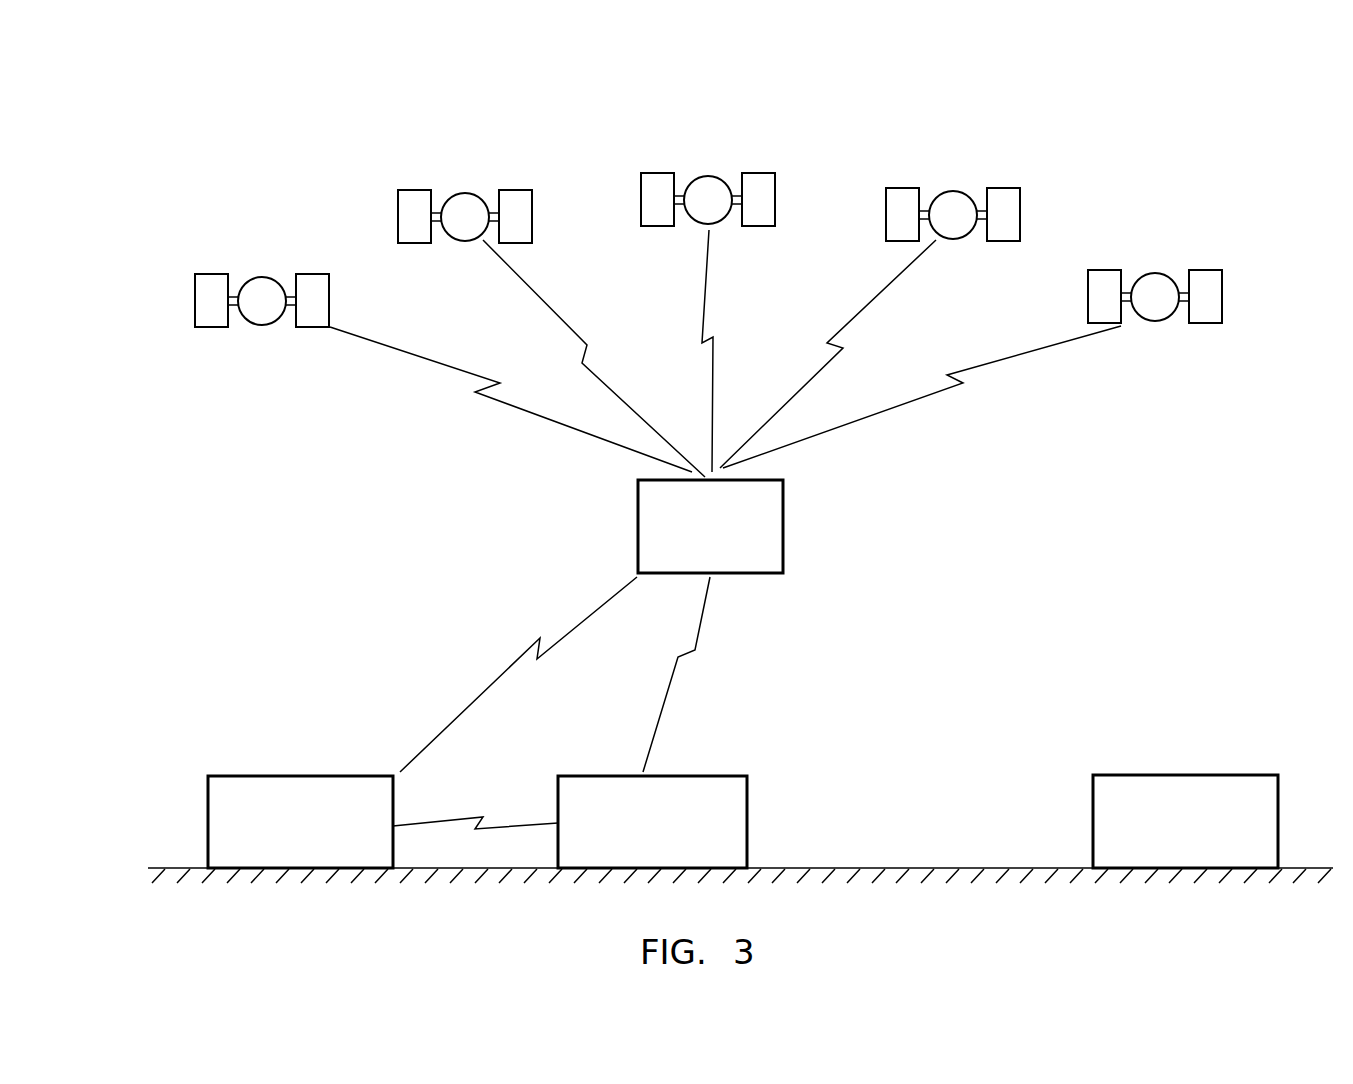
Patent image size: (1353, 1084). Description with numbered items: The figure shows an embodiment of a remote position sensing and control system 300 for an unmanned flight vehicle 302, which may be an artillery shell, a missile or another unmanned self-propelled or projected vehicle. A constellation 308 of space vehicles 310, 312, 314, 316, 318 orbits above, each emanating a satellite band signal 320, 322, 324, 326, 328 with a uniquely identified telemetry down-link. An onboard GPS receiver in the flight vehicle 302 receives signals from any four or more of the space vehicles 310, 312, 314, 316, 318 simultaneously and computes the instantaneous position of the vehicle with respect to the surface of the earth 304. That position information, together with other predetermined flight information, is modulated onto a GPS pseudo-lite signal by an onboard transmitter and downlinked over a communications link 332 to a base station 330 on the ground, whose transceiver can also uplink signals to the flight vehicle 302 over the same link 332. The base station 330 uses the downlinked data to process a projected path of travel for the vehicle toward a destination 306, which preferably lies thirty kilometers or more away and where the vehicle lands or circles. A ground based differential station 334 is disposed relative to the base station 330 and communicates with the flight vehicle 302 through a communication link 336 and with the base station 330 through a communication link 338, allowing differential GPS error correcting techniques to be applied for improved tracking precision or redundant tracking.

The remote position sensing and control system 300 is at (1112, 457).
The unmanned flight vehicle 302 is at (784, 535).
The surface of the earth 304 is at (927, 867).
The destination 306 is at (1253, 773).
The constellation of space vehicles 308 is at (1082, 173).
The space vehicle 310 is at (278, 278).
The space vehicle 312 is at (479, 194).
The space vehicle 314 is at (727, 176).
The space vehicle 316 is at (966, 192).
The space vehicle 318 is at (1173, 277).
The satellite band signal 320 is at (393, 348).
The satellite band signal 322 is at (508, 280).
The satellite band signal 324 is at (703, 278).
The satellite band signal 326 is at (867, 308).
The satellite band signal 328 is at (1032, 348).
The base station 330 is at (328, 777).
The communications link 332 is at (503, 675).
The differential station 334 is at (722, 775).
The communication link 336 is at (697, 612).
The communication link 338 is at (515, 825).